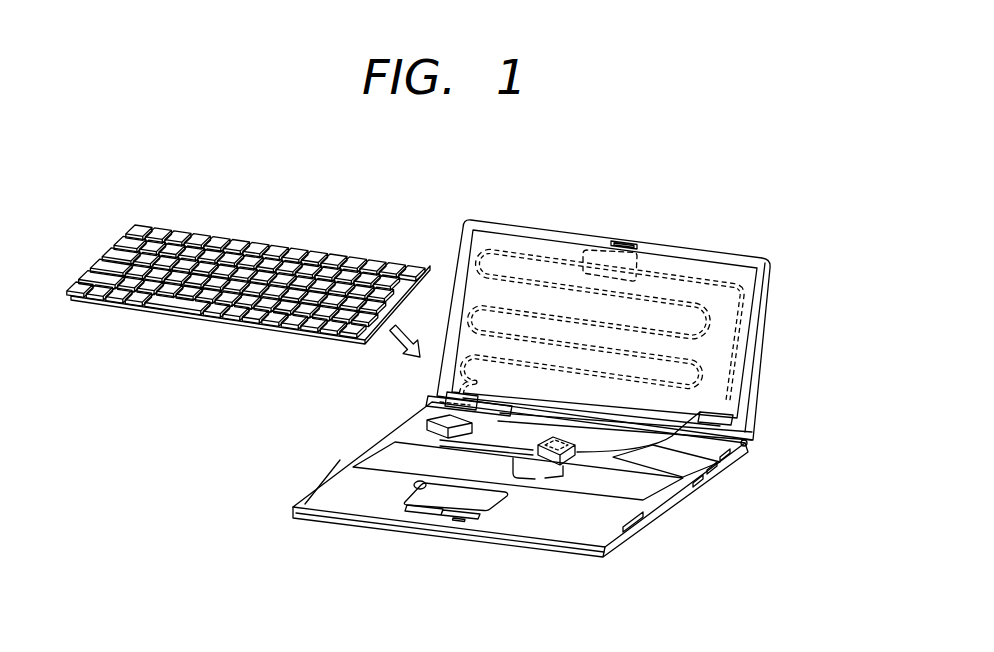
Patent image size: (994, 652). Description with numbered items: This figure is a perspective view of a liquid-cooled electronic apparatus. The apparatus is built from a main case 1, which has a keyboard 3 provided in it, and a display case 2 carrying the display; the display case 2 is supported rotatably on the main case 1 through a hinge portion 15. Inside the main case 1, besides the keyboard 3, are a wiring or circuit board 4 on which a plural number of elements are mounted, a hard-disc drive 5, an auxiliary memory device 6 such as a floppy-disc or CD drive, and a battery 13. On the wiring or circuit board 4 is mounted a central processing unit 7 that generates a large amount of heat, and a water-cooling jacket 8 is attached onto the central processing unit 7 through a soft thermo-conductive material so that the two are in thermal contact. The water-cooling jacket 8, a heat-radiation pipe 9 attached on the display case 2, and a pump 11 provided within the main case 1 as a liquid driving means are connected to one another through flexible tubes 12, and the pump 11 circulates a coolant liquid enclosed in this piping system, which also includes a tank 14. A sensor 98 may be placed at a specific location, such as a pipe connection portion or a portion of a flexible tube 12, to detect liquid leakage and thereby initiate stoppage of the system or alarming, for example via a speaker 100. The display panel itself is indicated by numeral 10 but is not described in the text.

The main case 1 is at (618, 548).
The display case 2 is at (572, 230).
The keyboard 3 is at (297, 247).
The wiring or circuit board 4 is at (717, 470).
The hard-disc drive 5 is at (628, 485).
The auxiliary memory device 6 is at (390, 460).
The central processing unit 7 is at (560, 458).
The water-cooling jacket 8 is at (530, 455).
The heat-radiation pipe 9 is at (722, 278).
The display panel 10 is at (485, 236).
The pump 11 is at (437, 428).
The flexible tube 12 is at (438, 395).
The battery 13 is at (570, 518).
The tank 14 is at (620, 257).
The hinge portion 15 is at (478, 390).
The sensor 98 is at (340, 460).
The speaker 100 is at (417, 488).